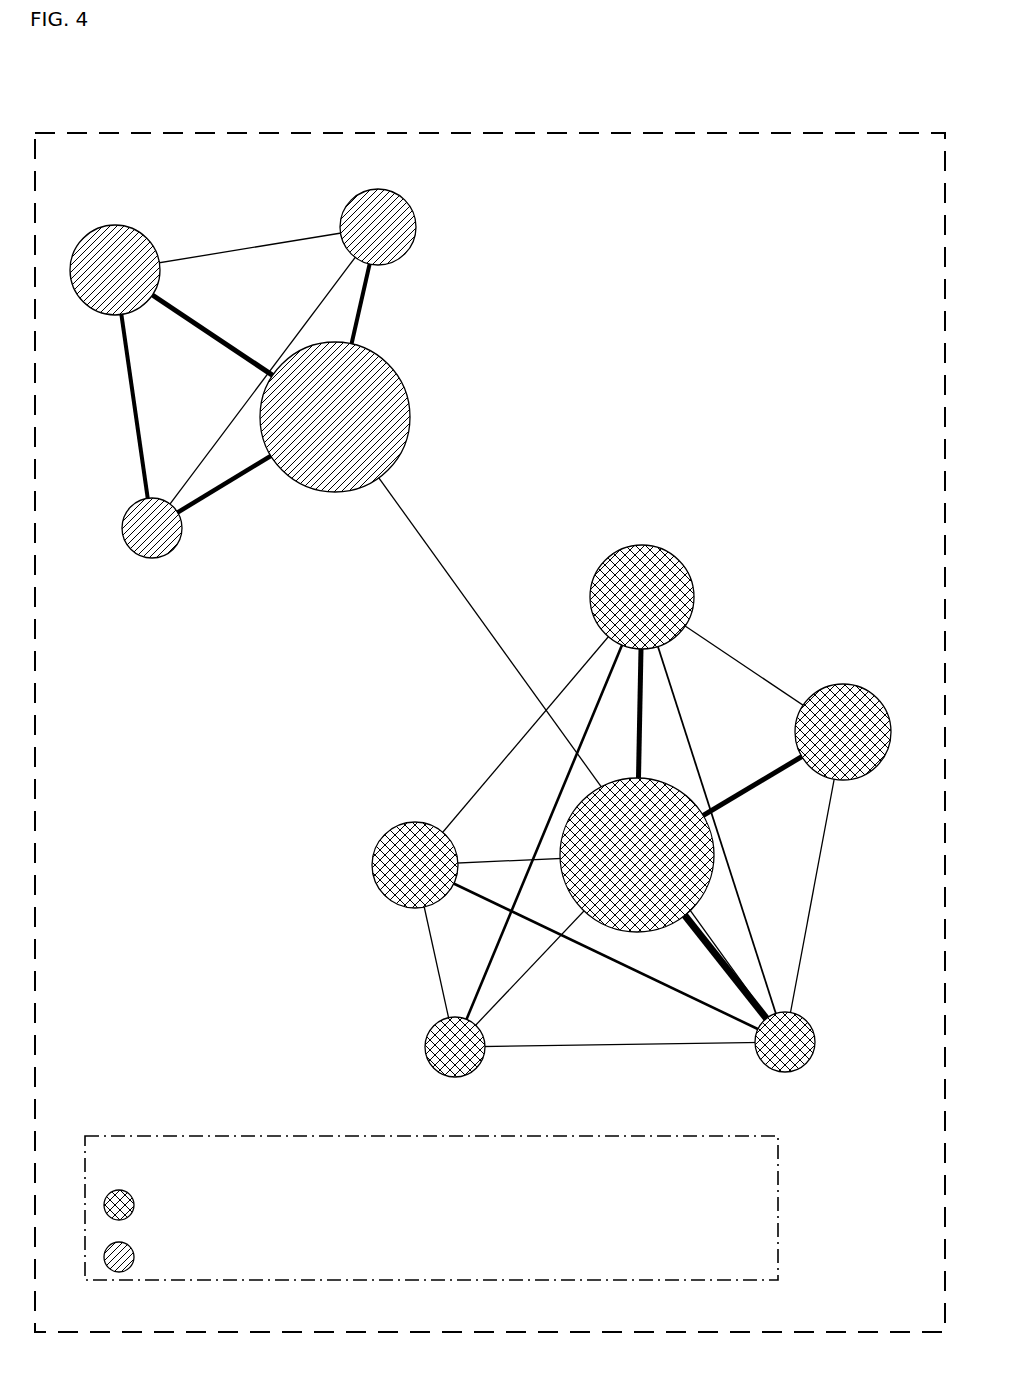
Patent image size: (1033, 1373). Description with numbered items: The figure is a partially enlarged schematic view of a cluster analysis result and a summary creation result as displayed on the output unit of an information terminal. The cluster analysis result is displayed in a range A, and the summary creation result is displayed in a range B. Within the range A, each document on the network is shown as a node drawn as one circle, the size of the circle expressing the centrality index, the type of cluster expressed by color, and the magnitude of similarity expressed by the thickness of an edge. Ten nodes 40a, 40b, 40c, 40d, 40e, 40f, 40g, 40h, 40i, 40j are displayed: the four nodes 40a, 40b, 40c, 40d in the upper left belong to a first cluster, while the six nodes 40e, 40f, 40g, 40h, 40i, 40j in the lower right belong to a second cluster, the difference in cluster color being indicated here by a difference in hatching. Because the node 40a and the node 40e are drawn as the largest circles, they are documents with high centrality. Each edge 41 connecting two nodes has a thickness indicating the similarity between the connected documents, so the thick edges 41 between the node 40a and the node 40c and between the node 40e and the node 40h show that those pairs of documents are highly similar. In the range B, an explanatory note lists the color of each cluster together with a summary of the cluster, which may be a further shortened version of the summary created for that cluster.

The range A is at (90, 132).
The range B is at (150, 1135).
The node 40a is at (405, 398).
The node 40b is at (412, 213).
The node 40c is at (138, 232).
The node 40d is at (132, 508).
The node 40e is at (622, 782).
The node 40f is at (622, 550).
The node 40g is at (832, 686).
The node 40h is at (768, 1068).
The node 40i is at (440, 1072).
The node 40j is at (378, 892).
The edge 41 is at (475, 645).